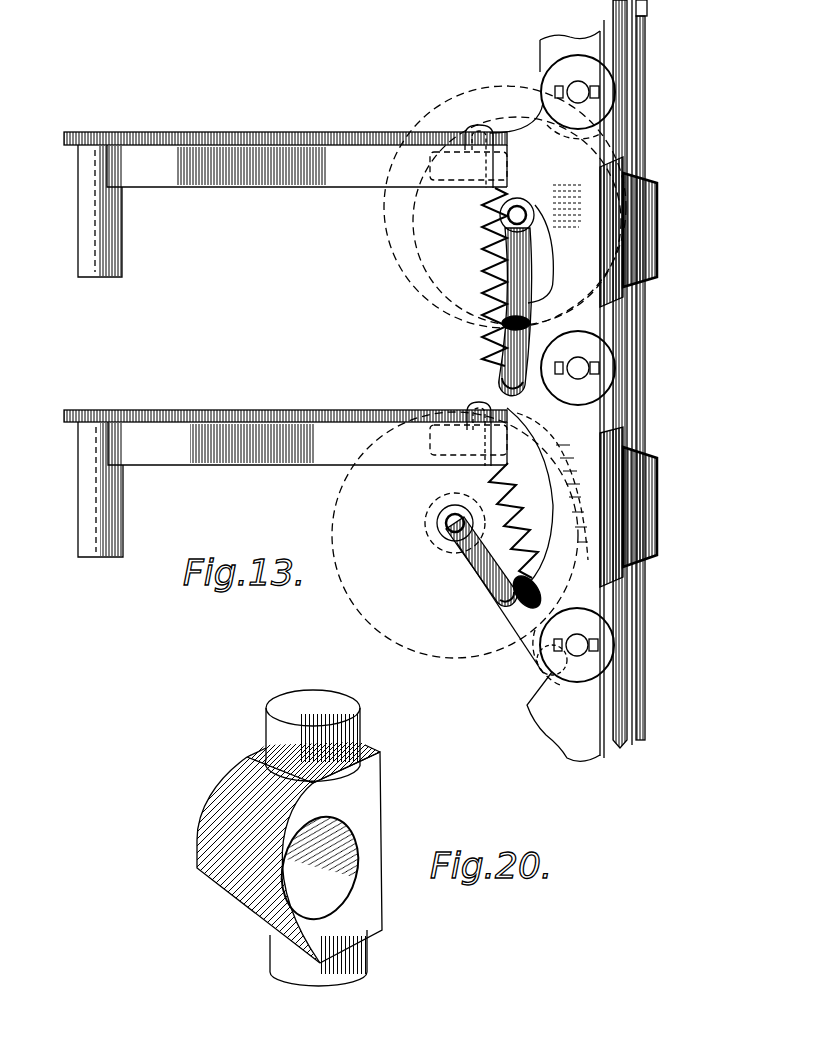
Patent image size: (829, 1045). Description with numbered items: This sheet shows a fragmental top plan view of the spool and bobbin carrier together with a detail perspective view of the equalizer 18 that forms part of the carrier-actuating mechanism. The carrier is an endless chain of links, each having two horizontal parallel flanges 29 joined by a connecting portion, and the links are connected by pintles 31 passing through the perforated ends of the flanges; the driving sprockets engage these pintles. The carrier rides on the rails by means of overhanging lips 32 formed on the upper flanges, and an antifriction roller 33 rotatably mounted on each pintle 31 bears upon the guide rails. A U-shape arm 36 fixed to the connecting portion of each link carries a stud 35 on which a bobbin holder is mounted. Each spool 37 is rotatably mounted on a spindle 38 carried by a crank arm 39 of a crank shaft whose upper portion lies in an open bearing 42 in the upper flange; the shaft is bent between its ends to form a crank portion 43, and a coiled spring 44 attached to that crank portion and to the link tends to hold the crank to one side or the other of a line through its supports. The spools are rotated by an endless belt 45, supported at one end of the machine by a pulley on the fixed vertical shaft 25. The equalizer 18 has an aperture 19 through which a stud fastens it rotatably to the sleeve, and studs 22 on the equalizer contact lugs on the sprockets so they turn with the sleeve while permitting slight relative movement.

In FIG. 20, the equalizer 18 is at (372, 802).
In FIG. 20, the aperture 19 is at (340, 904).
In FIG. 20, the studs 22 is at (298, 702).
In FIG. 13, the fixed vertical shaft 25 is at (630, 745).
In FIG. 13, the horizontal parallel flanges 29 is at (585, 236).
In FIG. 13, the pintles 31 is at (572, 87).
In FIG. 13, the overhanging lips 32 is at (657, 240).
In FIG. 13, the antifriction roller 33 is at (603, 107).
In FIG. 13, the stud 35 is at (123, 263).
In FIG. 13, the U-shape arm 36 is at (229, 130).
In FIG. 13, the spool 37 is at (412, 262).
In FIG. 13, the spindle 38 is at (518, 212).
In FIG. 13, the crank arm 39 is at (507, 291).
In FIG. 13, the open bearing 42 is at (502, 320).
In FIG. 13, the crank portion 43 is at (498, 386).
In FIG. 13, the coiled spring 44 is at (490, 228).
In FIG. 13, the endless belt 45 is at (625, 640).